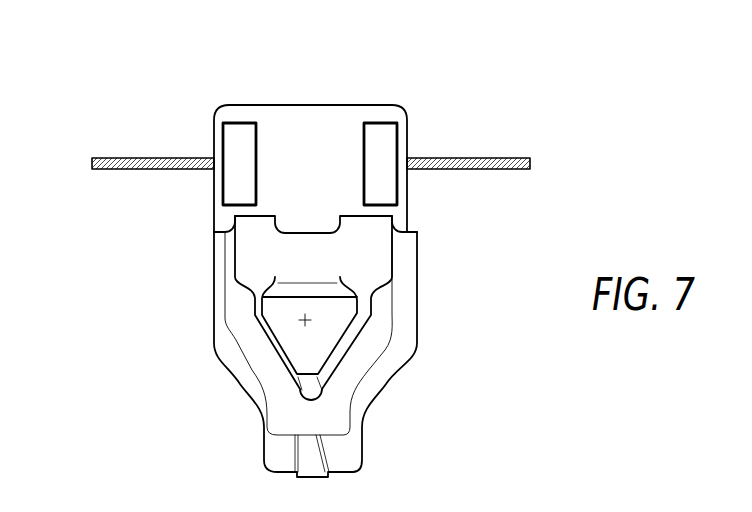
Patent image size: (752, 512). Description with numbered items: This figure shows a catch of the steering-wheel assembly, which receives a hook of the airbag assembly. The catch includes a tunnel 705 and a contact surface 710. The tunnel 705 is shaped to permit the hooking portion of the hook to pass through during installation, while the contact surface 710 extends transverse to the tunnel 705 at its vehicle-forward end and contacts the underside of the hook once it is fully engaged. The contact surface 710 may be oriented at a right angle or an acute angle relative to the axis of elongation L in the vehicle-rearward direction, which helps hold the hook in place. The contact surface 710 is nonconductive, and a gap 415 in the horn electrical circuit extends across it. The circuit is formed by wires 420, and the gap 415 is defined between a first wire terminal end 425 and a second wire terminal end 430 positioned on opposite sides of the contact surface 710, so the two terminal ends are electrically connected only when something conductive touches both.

The gap 415 is at (322, 134).
The wires 420 is at (130, 157).
The first wire terminal end 425 is at (238, 122).
The second wire terminal end 430 is at (382, 120).
The tunnel 705 is at (343, 345).
The contact surface 710 is at (292, 168).
The axis of elongation L is at (302, 323).